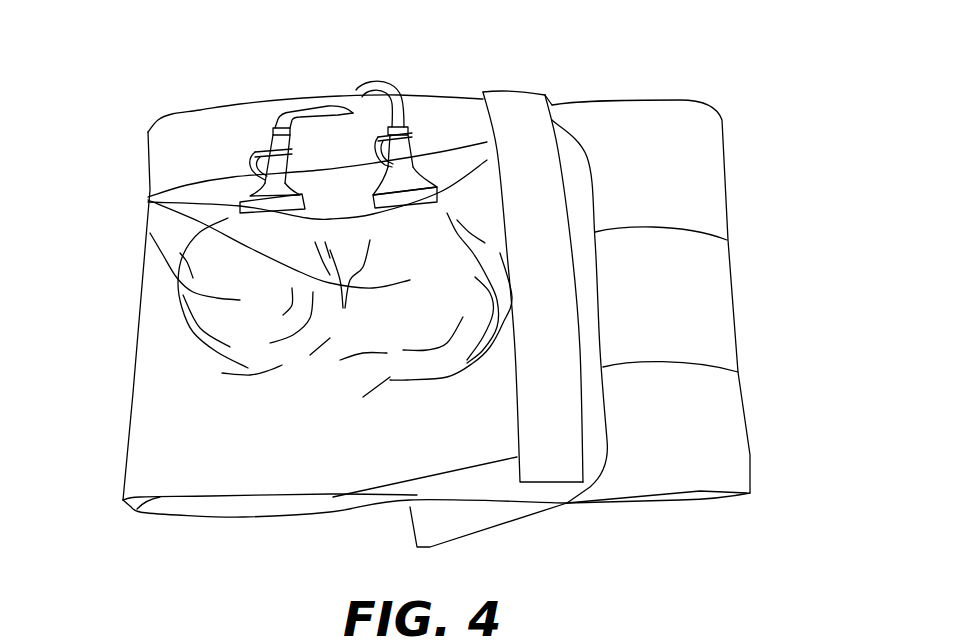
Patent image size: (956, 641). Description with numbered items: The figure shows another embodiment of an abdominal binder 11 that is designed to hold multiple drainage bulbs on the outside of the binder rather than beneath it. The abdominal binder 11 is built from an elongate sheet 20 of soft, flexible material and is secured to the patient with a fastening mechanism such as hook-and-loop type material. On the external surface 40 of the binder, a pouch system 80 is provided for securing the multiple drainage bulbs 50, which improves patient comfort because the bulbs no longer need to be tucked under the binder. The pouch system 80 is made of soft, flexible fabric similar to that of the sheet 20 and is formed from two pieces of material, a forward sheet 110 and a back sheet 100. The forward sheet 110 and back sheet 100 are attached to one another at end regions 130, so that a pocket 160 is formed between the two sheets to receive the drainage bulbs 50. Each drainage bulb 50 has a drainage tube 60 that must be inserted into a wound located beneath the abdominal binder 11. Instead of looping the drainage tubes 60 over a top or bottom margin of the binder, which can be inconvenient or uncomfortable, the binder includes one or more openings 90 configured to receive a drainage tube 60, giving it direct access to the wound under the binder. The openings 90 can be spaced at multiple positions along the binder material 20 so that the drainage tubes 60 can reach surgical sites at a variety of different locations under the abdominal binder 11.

The abdominal binder 11 is at (745, 210).
The elongate sheet 20 is at (710, 322).
The external surface 40 is at (437, 107).
The drainage bulbs 50 is at (150, 233).
The drainage tubes 60 is at (287, 114).
The pouch system 80 is at (167, 447).
The openings 90 is at (343, 109).
The back sheet 100 is at (229, 178).
The forward sheet 110 is at (150, 338).
The end regions 130 is at (570, 438).
The pocket 160 is at (204, 196).